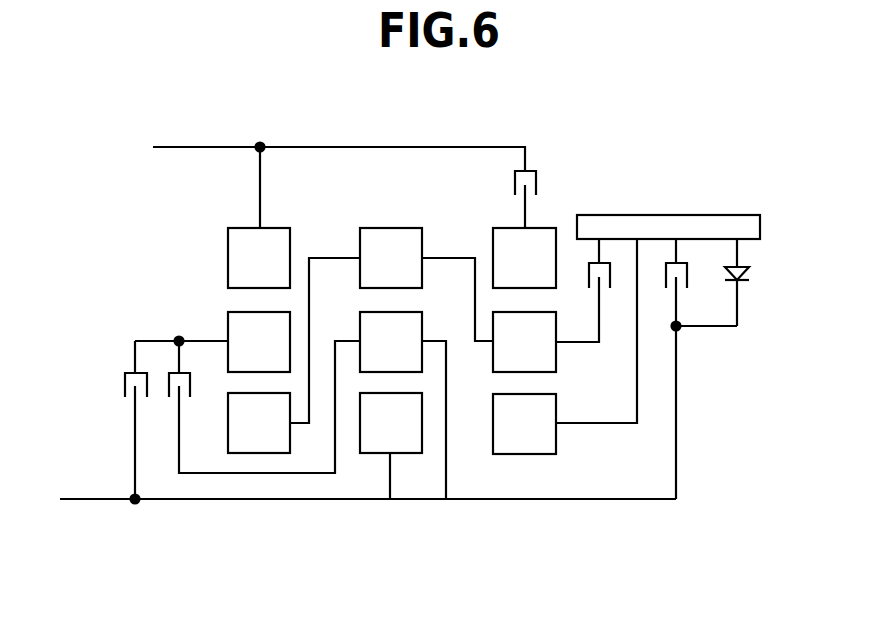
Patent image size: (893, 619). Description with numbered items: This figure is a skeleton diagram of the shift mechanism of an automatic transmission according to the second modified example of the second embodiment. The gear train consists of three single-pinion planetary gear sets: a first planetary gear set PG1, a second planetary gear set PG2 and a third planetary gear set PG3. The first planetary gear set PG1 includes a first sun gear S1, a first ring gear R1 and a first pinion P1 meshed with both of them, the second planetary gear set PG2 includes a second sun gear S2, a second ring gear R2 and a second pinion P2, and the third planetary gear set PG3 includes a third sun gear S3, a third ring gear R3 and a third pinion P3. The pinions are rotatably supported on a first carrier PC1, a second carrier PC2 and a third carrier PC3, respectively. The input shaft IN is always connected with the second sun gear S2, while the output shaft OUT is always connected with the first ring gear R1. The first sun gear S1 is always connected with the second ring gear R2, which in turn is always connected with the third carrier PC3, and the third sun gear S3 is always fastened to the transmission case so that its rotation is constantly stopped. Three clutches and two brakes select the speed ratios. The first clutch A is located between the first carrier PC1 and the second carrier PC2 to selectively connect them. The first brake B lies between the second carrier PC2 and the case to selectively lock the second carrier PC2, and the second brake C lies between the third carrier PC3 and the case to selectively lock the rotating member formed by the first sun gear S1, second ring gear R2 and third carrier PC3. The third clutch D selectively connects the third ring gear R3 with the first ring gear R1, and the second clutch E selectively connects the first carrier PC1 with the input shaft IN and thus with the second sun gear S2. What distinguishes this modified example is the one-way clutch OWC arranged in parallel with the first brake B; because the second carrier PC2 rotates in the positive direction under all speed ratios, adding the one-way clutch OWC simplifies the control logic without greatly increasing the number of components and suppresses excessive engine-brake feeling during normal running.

The output shaft OUT is at (301, 146).
The input shaft IN is at (95, 500).
The third clutch D is at (533, 171).
The second brake C is at (593, 262).
The first brake B is at (669, 262).
The first clutch A is at (173, 372).
The second clutch E is at (125, 386).
The one-way clutch OWC is at (751, 277).
The first carrier PC1 is at (196, 340).
The second carrier PC2 is at (350, 338).
The third carrier PC3 is at (575, 345).
The first planetary gear set PG1 is at (258, 460).
The second planetary gear set PG2 is at (402, 460).
The third planetary gear set PG3 is at (525, 460).
The first ring gear R1 is at (259, 258).
The second ring gear R2 is at (391, 258).
The third ring gear R3 is at (524, 258).
The first pinion P1 is at (259, 342).
The second pinion P2 is at (391, 342).
The third pinion P3 is at (524, 342).
The first sun gear S1 is at (259, 423).
The second sun gear S2 is at (391, 423).
The third sun gear S3 is at (524, 424).